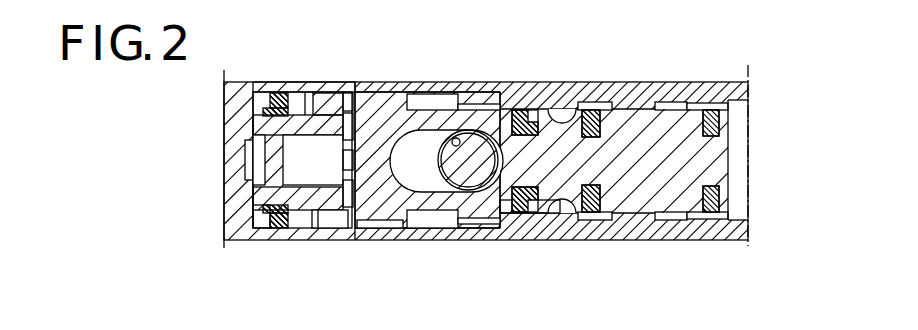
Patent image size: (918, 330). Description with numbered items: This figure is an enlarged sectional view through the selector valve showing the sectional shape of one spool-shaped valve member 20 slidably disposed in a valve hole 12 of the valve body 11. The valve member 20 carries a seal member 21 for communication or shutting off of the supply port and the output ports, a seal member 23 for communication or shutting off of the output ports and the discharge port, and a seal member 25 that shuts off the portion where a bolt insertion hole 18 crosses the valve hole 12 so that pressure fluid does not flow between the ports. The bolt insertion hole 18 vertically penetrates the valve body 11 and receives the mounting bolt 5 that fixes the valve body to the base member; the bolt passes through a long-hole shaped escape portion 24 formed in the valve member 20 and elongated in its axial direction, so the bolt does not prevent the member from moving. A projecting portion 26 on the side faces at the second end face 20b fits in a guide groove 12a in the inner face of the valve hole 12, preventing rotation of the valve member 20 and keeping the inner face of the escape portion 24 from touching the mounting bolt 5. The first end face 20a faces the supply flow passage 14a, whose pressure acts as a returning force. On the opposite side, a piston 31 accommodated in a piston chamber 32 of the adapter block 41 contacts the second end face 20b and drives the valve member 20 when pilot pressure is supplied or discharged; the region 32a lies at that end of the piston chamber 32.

The mounting bolt 5 is at (475, 153).
The valve body 11 is at (532, 228).
The valve hole 12 is at (630, 205).
The guide groove 12a is at (428, 212).
The supply flow passage 14a is at (742, 155).
The bolt insertion hole 18 is at (454, 139).
The valve member 20 is at (633, 112).
The first end face 20a is at (730, 145).
The second end face 20b is at (328, 135).
The seal member 21 is at (713, 110).
The seal member 23 is at (584, 110).
The escape portion 24 is at (412, 160).
The seal member 25 is at (522, 112).
The projecting portion 26 is at (387, 222).
The piston 31 is at (298, 93).
The piston chamber 32 is at (348, 217).
The spool flange 32a is at (263, 228).
The adapter block 41 is at (320, 228).